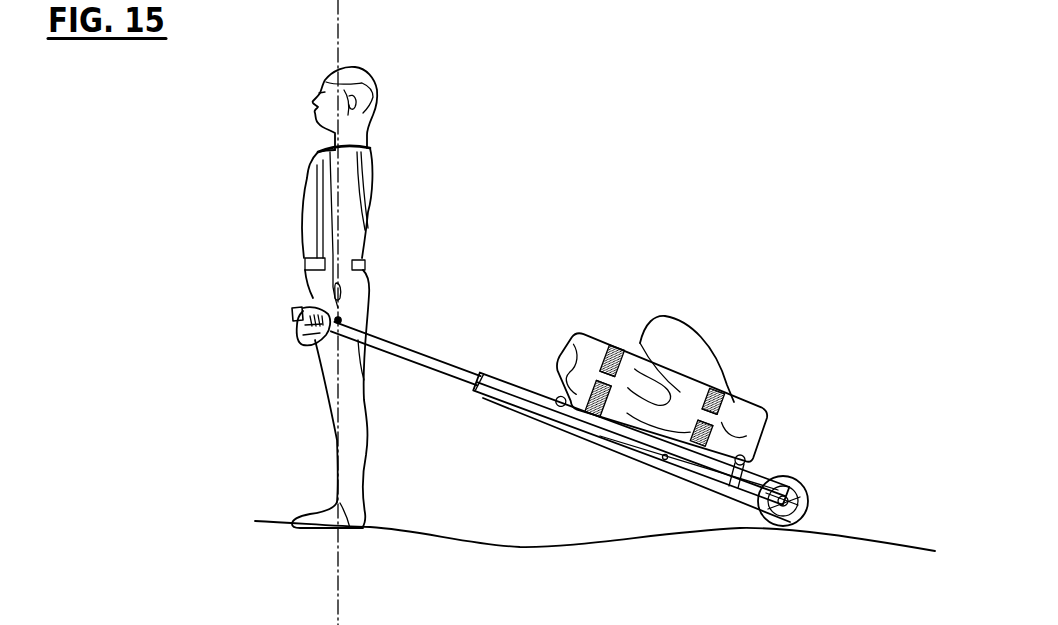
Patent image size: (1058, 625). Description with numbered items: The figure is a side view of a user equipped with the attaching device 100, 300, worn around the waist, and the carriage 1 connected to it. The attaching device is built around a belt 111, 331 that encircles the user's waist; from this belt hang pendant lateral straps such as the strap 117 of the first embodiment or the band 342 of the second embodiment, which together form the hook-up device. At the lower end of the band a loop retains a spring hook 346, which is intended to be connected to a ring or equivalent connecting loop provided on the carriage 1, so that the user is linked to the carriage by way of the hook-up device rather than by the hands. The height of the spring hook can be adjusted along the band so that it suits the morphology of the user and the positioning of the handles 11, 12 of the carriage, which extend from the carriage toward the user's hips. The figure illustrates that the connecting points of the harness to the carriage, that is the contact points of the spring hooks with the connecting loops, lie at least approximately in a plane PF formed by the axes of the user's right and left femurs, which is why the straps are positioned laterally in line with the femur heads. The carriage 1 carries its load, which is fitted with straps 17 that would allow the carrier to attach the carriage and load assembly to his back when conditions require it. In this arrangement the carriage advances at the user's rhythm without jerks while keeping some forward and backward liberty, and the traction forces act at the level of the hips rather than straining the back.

The carriage 1 is at (540, 364).
The handle 11 is at (223, 328).
The handle 12 is at (292, 313).
The straps 17 is at (682, 317).
The attaching device 100 is at (321, 223).
The harness vest 300 is at (321, 223).
The belt 111 is at (440, 202).
The belt 331 is at (357, 257).
The lateral strap 117 is at (449, 251).
The band 342 is at (341, 300).
The spring hook 346 is at (341, 321).
The plane formed by the axes of the femurs PF is at (326, 570).